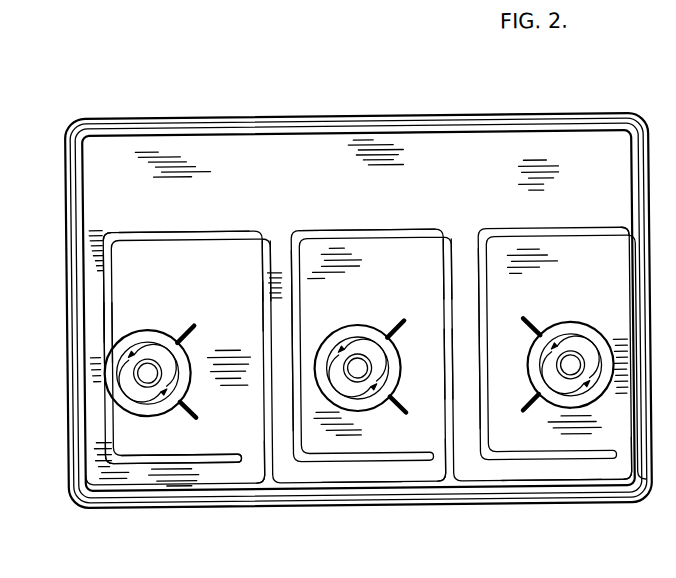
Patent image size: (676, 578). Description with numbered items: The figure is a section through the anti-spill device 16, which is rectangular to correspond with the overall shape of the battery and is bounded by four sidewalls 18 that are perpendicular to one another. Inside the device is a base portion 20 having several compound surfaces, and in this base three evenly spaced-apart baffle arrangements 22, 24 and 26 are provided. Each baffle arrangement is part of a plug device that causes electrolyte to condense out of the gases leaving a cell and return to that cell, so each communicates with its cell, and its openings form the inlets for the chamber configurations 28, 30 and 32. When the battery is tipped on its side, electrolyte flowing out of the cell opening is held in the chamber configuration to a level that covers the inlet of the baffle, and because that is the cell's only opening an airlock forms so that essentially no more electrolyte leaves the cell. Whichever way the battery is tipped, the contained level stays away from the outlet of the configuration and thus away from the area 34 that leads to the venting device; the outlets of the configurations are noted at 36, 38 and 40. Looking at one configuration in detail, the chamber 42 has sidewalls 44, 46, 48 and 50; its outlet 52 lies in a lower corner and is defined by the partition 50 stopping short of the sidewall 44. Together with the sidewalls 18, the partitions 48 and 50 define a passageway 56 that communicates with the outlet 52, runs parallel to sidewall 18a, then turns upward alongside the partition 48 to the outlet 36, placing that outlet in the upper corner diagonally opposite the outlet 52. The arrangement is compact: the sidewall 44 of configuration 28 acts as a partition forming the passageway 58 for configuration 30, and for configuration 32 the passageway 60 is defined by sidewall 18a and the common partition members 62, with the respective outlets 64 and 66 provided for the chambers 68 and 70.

The anti-spill device 16 is at (505, 97).
The sidewalls 18 is at (66, 192).
The sidewall 18a is at (187, 498).
The base portion 20 is at (222, 152).
The baffle arrangement 22 is at (148, 365).
The baffle arrangement 24 is at (357, 362).
The baffle arrangement 26 is at (604, 285).
The chamber configuration 28 is at (139, 222).
The chamber configuration 30 is at (350, 214).
The chamber configuration 32 is at (583, 215).
The area leading to venting device 34 is at (415, 160).
The outlet 36 is at (95, 225).
The outlet 38 is at (278, 240).
The outlet 40 is at (466, 243).
The chamber 42 is at (120, 268).
The sidewall 44 is at (260, 298).
The sidewall 46 is at (209, 240).
The partition 48 is at (112, 328).
The partition 50 is at (187, 455).
The outlet 52 is at (254, 462).
The passageway 56 is at (131, 470).
The passageway 58 is at (358, 468).
The passageway 60 is at (543, 460).
The common partition members 62 is at (447, 362).
The outlet 64 is at (438, 456).
The outlet 66 is at (624, 452).
The chamber 68 is at (401, 281).
The chamber 70 is at (585, 275).